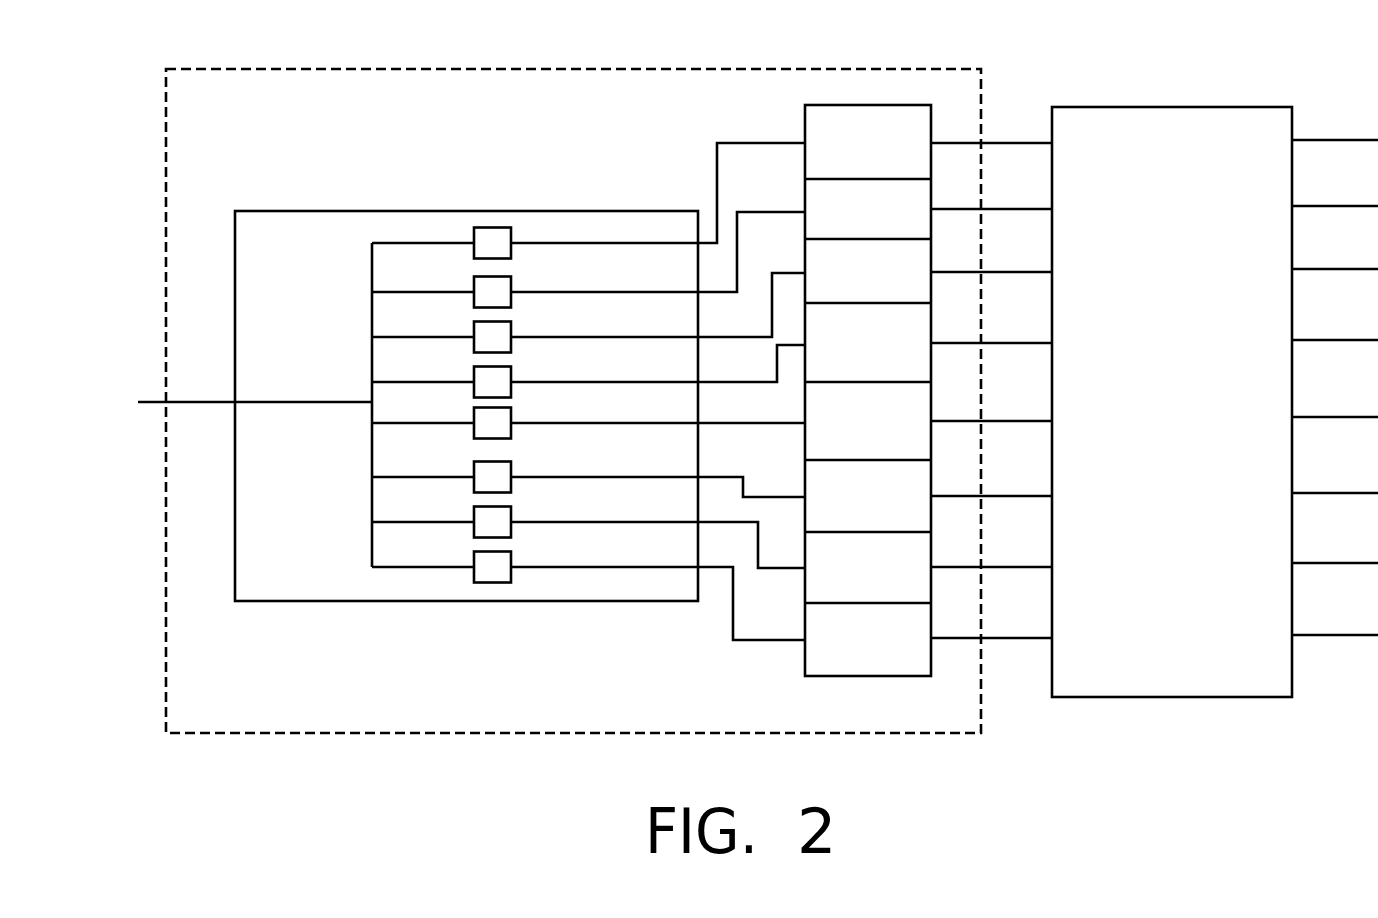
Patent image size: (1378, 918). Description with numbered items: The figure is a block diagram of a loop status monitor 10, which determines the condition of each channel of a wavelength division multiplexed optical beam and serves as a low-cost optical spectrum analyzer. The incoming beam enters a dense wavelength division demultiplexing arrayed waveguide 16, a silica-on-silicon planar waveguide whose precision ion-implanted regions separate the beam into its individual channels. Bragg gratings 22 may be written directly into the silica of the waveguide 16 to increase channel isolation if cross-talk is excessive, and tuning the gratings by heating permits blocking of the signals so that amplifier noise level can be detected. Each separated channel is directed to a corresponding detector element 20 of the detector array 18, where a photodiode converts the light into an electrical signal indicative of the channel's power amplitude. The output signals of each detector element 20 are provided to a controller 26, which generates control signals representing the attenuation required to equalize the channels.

The loop status monitor 10 is at (381, 733).
The dense wavelength division demultiplexing arrayed waveguide 16 is at (293, 248).
The detector array 18 is at (812, 88).
The detector element 20 is at (896, 207).
The Bragg gratings 22 is at (497, 248).
The controller 26 is at (1113, 700).